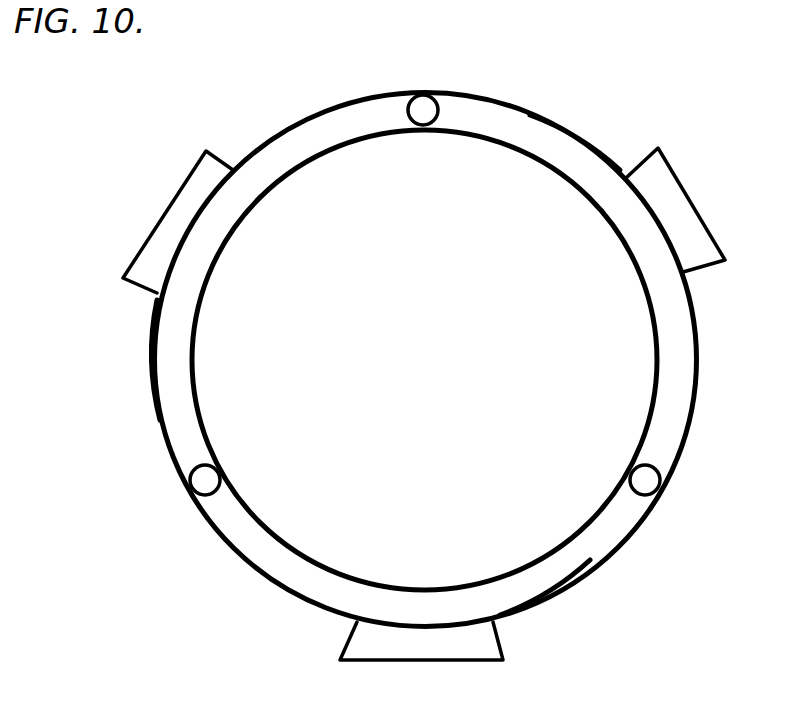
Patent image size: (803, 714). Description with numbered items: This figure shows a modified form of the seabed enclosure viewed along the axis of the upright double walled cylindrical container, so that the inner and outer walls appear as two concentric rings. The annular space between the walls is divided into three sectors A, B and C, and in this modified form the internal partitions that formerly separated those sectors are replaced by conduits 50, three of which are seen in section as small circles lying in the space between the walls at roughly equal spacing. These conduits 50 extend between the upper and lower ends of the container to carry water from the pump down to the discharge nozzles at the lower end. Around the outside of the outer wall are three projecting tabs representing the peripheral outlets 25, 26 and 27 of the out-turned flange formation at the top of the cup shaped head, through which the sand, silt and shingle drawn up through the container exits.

The peripheral outlet 25 is at (295, 133).
The peripheral outlet 26 is at (682, 328).
The peripheral outlet 27 is at (300, 587).
The conduit 50 is at (422, 100).
The sector A is at (165, 322).
The sector B is at (577, 157).
The sector C is at (543, 582).